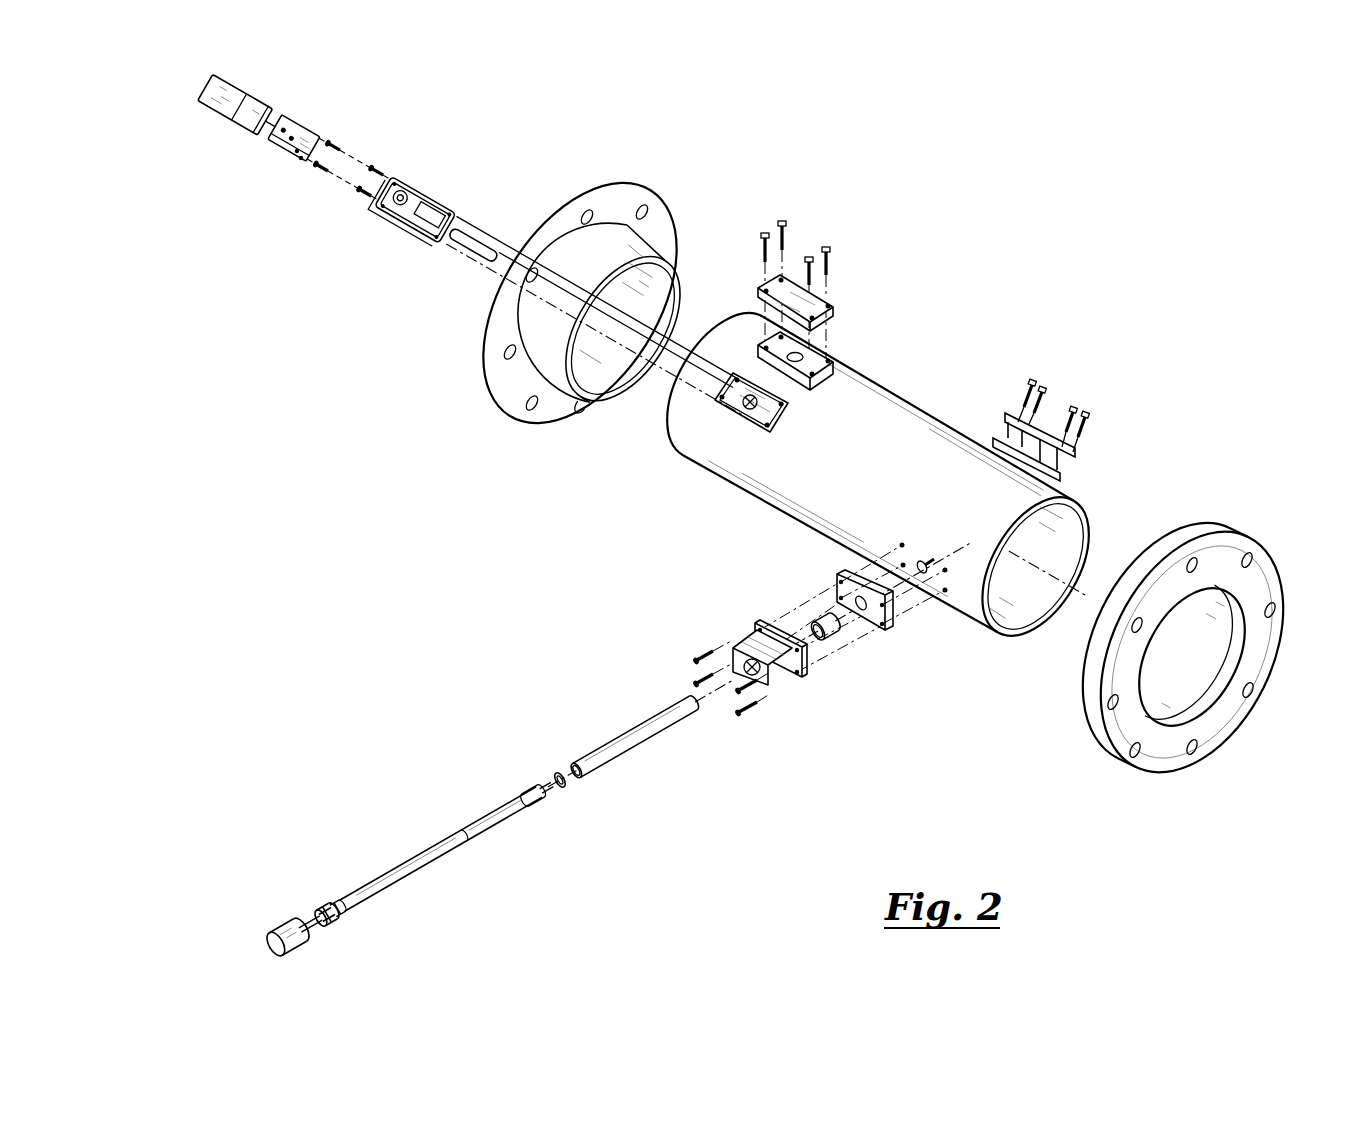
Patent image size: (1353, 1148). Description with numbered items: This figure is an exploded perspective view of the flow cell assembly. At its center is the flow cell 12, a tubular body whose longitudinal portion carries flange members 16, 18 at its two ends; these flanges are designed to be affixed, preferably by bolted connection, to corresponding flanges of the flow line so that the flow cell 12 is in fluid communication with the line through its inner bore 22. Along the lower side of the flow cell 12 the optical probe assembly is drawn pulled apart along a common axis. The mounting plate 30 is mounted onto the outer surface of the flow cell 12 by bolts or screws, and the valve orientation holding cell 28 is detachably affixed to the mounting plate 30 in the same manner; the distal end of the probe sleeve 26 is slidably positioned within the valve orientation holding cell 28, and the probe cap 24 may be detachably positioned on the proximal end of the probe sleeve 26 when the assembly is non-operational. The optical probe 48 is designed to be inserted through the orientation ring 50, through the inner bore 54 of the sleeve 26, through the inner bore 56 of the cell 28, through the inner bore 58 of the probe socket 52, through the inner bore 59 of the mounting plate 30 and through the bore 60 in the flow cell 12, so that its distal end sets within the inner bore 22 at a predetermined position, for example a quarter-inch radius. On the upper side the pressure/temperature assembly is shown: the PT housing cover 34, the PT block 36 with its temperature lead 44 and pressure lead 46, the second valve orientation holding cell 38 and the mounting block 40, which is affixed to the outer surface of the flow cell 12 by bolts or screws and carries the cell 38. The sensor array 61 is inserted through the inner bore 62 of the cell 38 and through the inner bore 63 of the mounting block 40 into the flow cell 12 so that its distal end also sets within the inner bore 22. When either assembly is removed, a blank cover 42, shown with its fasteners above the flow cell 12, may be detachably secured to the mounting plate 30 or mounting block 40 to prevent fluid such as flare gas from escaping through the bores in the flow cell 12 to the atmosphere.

The flow cell 12 is at (865, 482).
The flange member 16 is at (497, 383).
The flange member 18 is at (1215, 740).
The inner bore 22 is at (1020, 597).
The probe cap 24 is at (283, 922).
The probe sleeve 26 is at (633, 717).
The valve orientation holding cell 28 is at (760, 646).
The mounting plate 30 is at (897, 620).
The PT housing cover 34 is at (205, 95).
The PT block 36 is at (285, 122).
The second valve orientation holding cell 38 is at (405, 226).
The mounting block 40 is at (728, 408).
The blank cover 42 is at (786, 278).
The temperature lead 44 is at (296, 152).
The pressure lead 46 is at (302, 160).
The optical probe 48 is at (415, 855).
The orientation ring 50 is at (556, 774).
The probe socket 52 is at (819, 617).
The inner bore 54 is at (578, 778).
The inner bore 56 is at (734, 662).
The inner bore 58 is at (812, 636).
The inner bore 59 is at (857, 597).
The bore 60 is at (923, 576).
The sensor array 61 is at (480, 232).
The inner bore 62 is at (397, 194).
The inner bore 63 is at (750, 396).